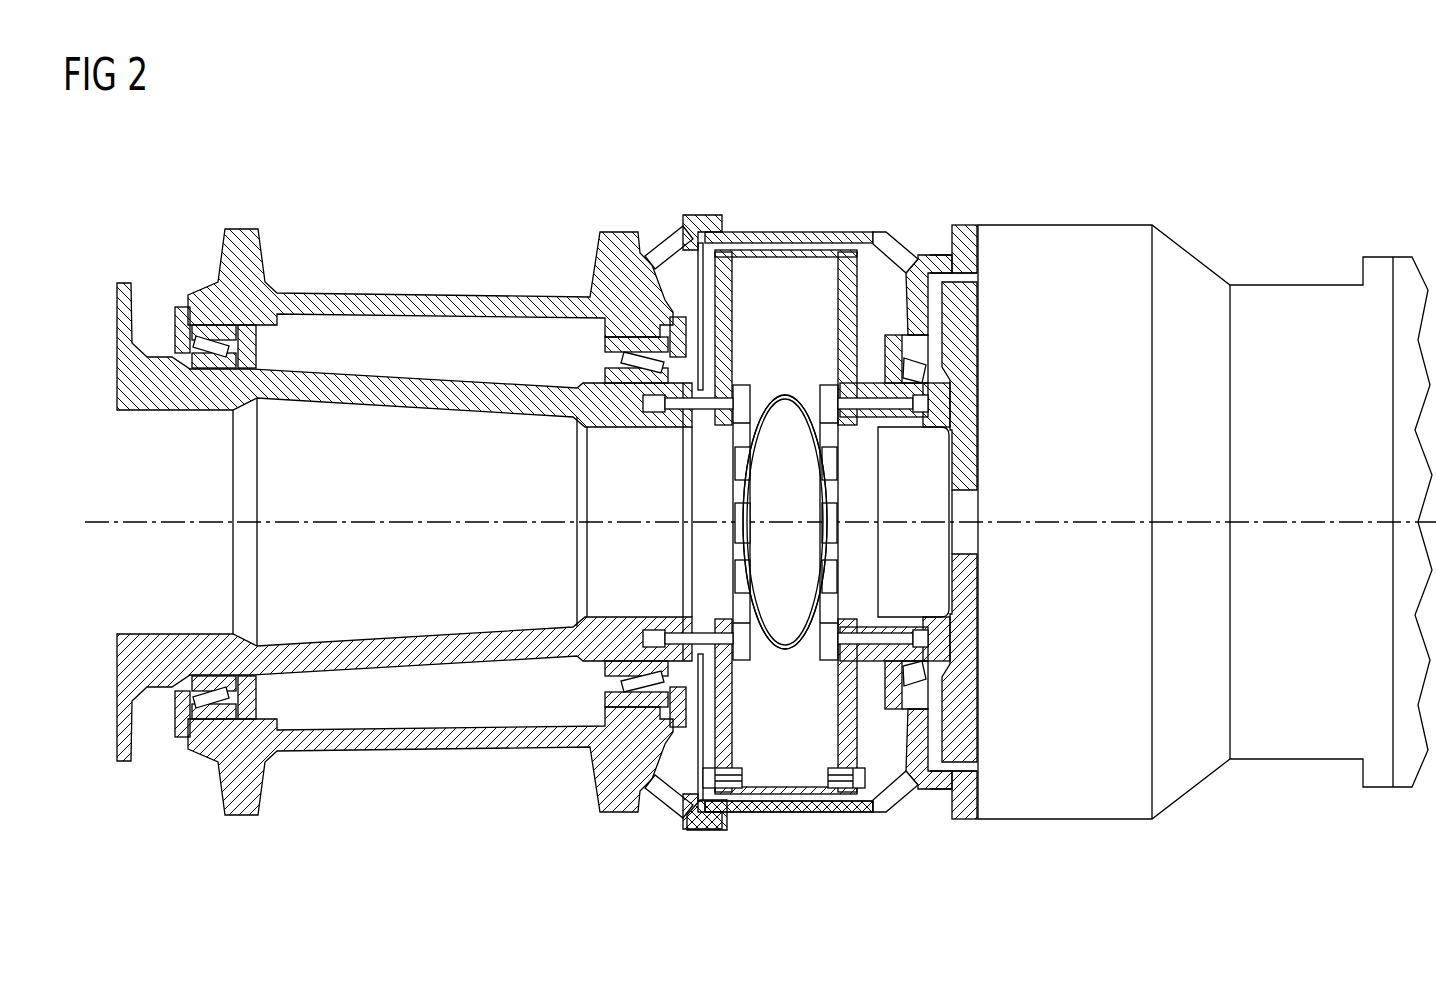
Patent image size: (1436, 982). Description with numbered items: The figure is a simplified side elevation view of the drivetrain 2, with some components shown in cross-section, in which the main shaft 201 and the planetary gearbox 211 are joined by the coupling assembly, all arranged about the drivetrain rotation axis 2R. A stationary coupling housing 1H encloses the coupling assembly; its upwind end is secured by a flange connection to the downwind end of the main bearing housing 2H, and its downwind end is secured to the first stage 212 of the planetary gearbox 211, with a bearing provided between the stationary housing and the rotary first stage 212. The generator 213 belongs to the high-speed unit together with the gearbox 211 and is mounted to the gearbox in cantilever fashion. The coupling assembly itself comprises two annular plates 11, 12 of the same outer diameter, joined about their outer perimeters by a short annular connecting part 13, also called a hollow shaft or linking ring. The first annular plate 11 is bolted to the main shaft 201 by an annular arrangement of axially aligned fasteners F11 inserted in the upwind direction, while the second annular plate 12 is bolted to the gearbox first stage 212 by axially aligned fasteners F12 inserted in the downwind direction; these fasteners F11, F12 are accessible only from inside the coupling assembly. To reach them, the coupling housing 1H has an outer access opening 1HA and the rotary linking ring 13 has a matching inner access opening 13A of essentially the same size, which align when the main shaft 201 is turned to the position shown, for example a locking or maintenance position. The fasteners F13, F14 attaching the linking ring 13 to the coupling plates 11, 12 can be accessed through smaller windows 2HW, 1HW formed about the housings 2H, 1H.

The drivetrain 2 is at (985, 162).
The main bearing housing 2H is at (383, 297).
The window 2HW is at (670, 247).
The drivetrain rotation axis 2R is at (95, 520).
The main shaft 201 is at (164, 412).
The coupling housing 1H is at (796, 232).
The window 1HW is at (892, 246).
The outer access opening 1HA is at (786, 652).
The first annular plate 11 is at (730, 340).
The second annular plate 12 is at (838, 310).
The annular connecting part 13 is at (786, 806).
The inner access opening 13A is at (787, 402).
The fasteners F11 is at (745, 405).
The fasteners F12 is at (832, 520).
The fasteners F13 is at (712, 790).
The fourth fastening elements F14 is at (858, 790).
The planetary gearbox 211 is at (1070, 238).
The gearbox first stage 212 is at (965, 676).
The generator 213 is at (962, 386).